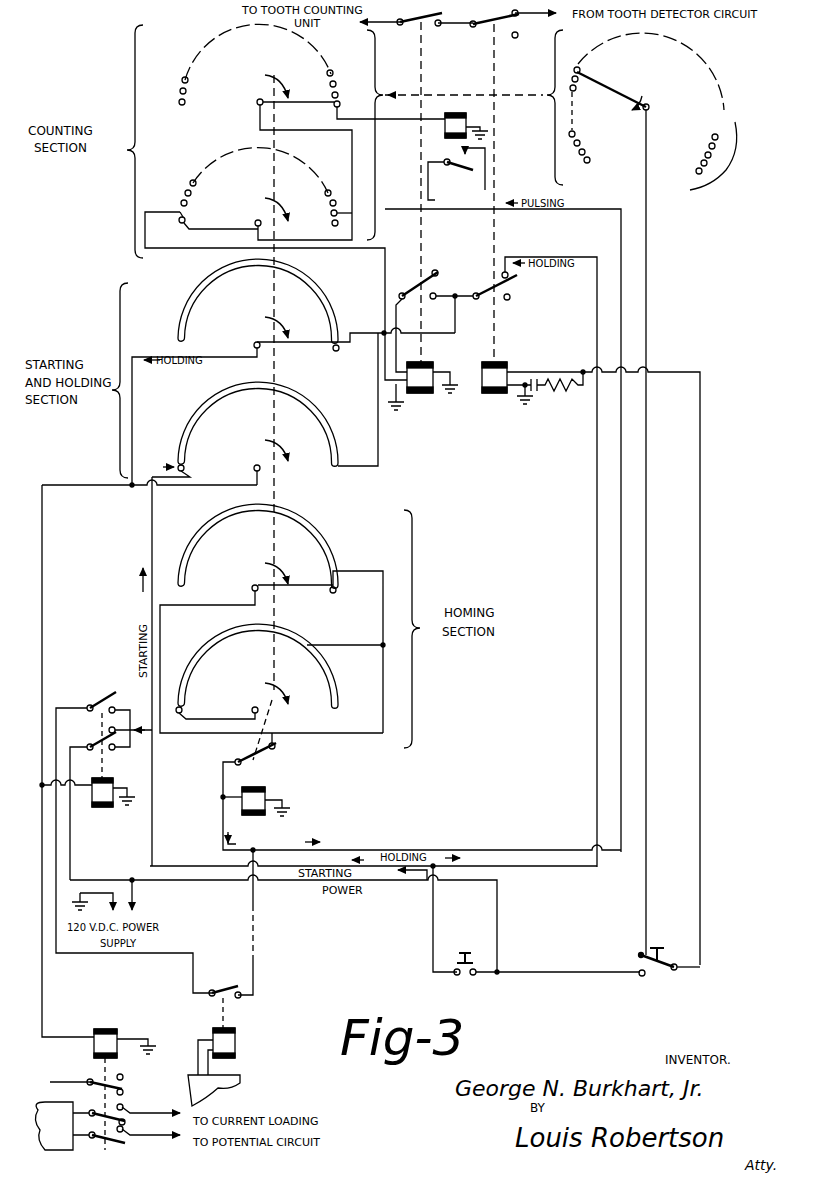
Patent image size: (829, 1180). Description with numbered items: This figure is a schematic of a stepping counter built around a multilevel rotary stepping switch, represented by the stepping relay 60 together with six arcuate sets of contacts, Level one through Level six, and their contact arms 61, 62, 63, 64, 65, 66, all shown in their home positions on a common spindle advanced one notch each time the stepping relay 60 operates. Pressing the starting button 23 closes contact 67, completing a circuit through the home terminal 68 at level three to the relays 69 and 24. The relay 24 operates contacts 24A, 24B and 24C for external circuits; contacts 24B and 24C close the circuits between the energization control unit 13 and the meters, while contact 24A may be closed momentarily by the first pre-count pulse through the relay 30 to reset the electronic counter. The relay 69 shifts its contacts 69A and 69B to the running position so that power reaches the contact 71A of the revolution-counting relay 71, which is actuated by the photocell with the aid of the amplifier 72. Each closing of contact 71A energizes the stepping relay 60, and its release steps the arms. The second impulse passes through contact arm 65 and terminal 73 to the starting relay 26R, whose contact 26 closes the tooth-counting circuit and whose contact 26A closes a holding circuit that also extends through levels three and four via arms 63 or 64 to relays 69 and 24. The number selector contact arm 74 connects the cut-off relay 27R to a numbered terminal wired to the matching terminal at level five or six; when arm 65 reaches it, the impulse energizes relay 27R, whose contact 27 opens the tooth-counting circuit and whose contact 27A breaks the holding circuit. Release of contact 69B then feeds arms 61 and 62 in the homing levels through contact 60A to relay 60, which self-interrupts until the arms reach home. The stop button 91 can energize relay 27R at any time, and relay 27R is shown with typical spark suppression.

The energization control unit 13 is at (58, 1153).
The starting button 23 is at (478, 942).
The external control relay 24 is at (94, 1046).
The contact of relay 24 24A is at (452, 159).
The contact of relay 24 24B is at (124, 1105).
The contact of relay 24 24C is at (110, 1148).
The contact of starting relay 26 is at (422, 17).
The contact of starting relay 26A is at (415, 281).
The starting relay 26R is at (432, 363).
The contact of cut-off relay 27 is at (492, 17).
The contact of cut-off relay 27A is at (495, 289).
The cut-off relay 27R is at (507, 363).
The relay 30 is at (464, 112).
The stepping relay 60 is at (245, 817).
The contact of stepping relay 60A is at (268, 752).
The contact arm at level 1 61 is at (246, 718).
The contact arm at level 2 62 is at (323, 584).
The contact arm at level 3 63 is at (256, 464).
The contact arm at level 4 64 is at (330, 344).
The contact arm at level 5 65 is at (254, 224).
The contact arm at level 6 66 is at (330, 101).
The contact of starting button 67 is at (558, 962).
The home terminal at level 3 68 is at (184, 460).
The starting relay 69 is at (113, 781).
The contact of relay 69 69A is at (134, 838).
The contact of relay 69 69B is at (107, 795).
The revolution-counting relay 71 is at (238, 1030).
The contact of revolution-counting relay 71A is at (206, 988).
The amplifier 72 is at (248, 1082).
The terminal at level 5 73 is at (186, 212).
The number selector contact arm 74 is at (610, 88).
The stop button 91 is at (678, 952).